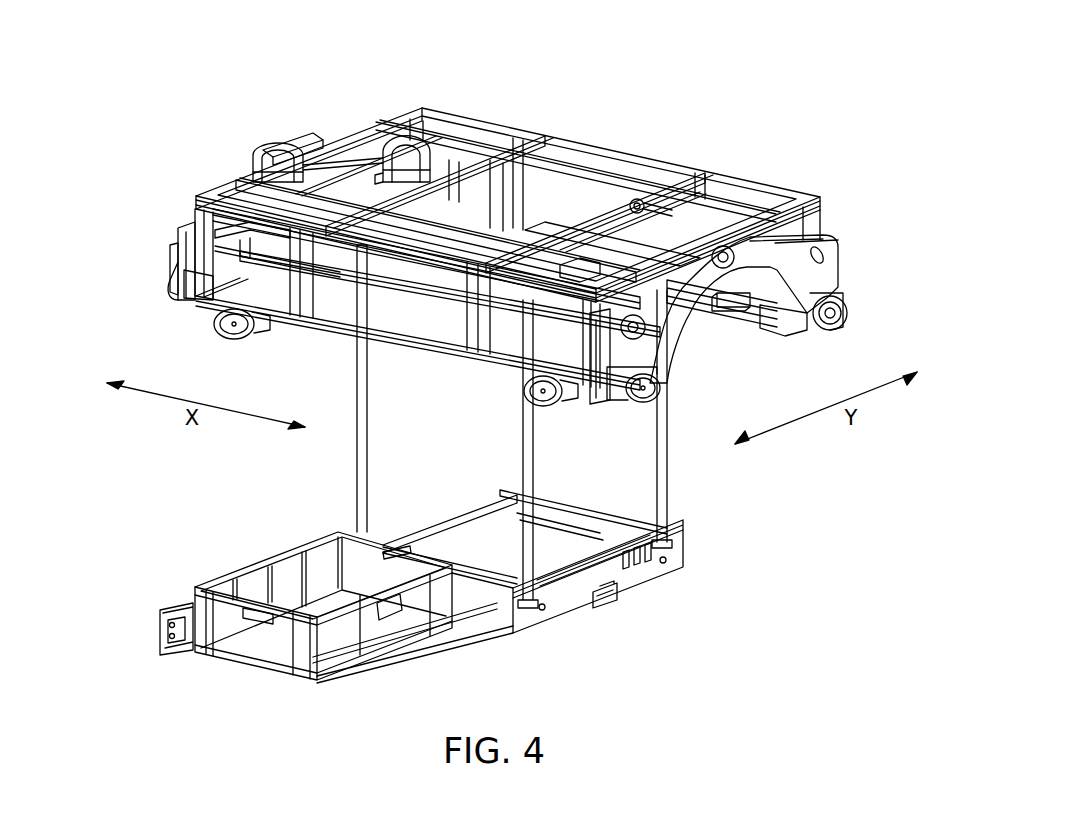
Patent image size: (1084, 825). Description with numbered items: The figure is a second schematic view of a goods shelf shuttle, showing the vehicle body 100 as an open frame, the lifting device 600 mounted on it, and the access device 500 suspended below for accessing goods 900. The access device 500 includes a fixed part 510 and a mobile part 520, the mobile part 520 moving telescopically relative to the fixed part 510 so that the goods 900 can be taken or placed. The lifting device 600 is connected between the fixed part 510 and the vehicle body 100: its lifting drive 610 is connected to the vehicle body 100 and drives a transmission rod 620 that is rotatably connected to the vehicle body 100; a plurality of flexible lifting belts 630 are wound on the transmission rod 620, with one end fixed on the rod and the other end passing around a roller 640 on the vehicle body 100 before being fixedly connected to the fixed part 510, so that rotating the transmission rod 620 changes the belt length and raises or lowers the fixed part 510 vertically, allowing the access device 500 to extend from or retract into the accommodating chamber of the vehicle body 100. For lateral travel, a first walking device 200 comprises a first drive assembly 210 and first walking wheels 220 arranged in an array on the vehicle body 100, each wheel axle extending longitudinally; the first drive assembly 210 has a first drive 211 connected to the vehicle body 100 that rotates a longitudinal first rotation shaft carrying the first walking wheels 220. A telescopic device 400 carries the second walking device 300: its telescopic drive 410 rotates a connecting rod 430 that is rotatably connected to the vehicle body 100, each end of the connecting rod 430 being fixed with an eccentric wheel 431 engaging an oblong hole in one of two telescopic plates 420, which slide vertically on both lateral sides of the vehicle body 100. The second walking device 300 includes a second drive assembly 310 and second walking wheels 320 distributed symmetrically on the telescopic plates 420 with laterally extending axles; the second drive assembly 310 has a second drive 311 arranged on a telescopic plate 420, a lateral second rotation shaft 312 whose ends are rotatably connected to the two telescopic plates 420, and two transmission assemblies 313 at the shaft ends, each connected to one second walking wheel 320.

The vehicle body 100 is at (643, 163).
The first walking device 200 is at (222, 327).
The first drive assembly 210 is at (780, 315).
The first drive 211 is at (760, 317).
The first walking wheels 220 is at (557, 407).
The second walking device 300 is at (180, 288).
The second drive assembly 310 is at (307, 383).
The second drive 311 is at (537, 313).
The second rotation shaft 312 is at (447, 293).
The transmission assemblies 313 is at (270, 313).
The second walking wheels 320 is at (655, 388).
The telescopic device 400 is at (318, 158).
The telescopic drive 410 is at (705, 240).
The telescopic plates 420 is at (820, 290).
The connecting rod 430 is at (540, 217).
The eccentric wheel 431 is at (788, 230).
The access device 500 is at (540, 627).
The fixed part 510 is at (578, 597).
The mobile part 520 is at (167, 627).
The lifting device 600 is at (430, 140).
The lifting drive 610 is at (398, 135).
The transmission rod 620 is at (320, 140).
The flexible lifting belts 630 is at (500, 470).
The rollers 640 is at (643, 203).
The goods 900 is at (277, 563).